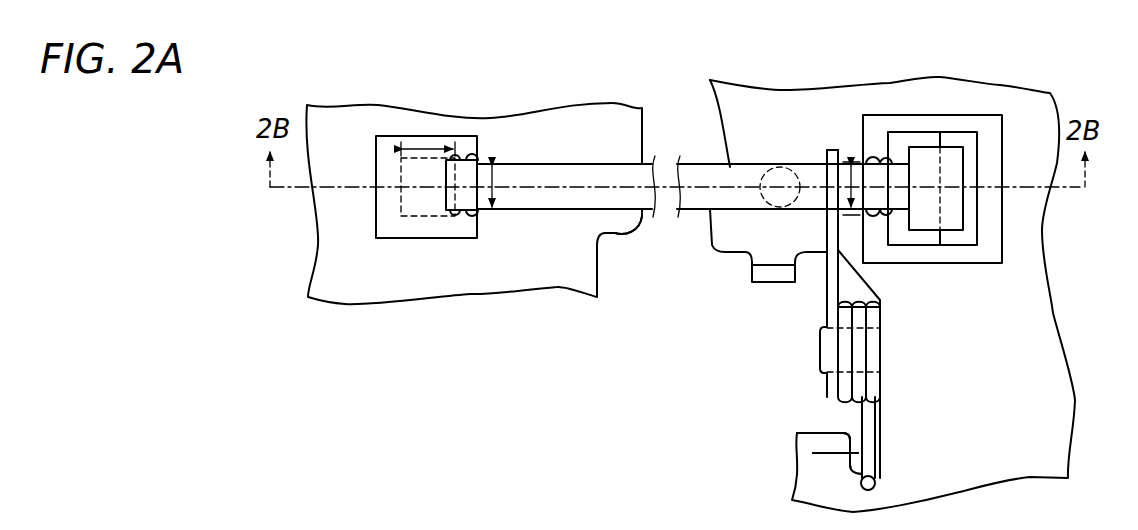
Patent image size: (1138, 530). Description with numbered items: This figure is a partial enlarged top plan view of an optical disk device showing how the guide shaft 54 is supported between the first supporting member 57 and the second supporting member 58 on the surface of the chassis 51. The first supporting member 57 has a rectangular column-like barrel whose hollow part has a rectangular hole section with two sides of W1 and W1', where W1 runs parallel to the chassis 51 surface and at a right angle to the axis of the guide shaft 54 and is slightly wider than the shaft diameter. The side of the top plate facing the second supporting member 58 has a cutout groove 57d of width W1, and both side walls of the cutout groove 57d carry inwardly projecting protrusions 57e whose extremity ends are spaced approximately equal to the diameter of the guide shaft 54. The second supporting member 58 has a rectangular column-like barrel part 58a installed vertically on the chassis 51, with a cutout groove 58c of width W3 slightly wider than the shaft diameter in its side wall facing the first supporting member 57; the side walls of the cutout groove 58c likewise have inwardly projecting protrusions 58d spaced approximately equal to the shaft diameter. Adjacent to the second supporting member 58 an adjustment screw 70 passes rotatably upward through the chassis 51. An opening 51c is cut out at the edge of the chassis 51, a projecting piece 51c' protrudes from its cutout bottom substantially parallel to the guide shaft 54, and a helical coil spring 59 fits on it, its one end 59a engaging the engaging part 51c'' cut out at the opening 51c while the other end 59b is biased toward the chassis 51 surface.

The chassis 51 is at (559, 296).
The opening 51c is at (774, 427).
The projecting piece 51c' is at (804, 350).
The engaging part 51c'' is at (791, 453).
The guide shaft 54 is at (614, 217).
The first supporting member 57 is at (383, 130).
The cutout groove 57d is at (454, 212).
The protrusions 57e is at (470, 158).
The second supporting member 58 is at (966, 108).
The barrel part 58a is at (960, 260).
The cutout groove 58c is at (888, 216).
The protrusions 58d is at (880, 160).
The helical coil spring 59 is at (821, 290).
The one end 59a is at (870, 440).
The other end 59b is at (831, 148).
The adjustment screw 70 is at (760, 168).
The width W1 is at (534, 168).
The side W1' is at (427, 114).
The width W3 is at (848, 193).